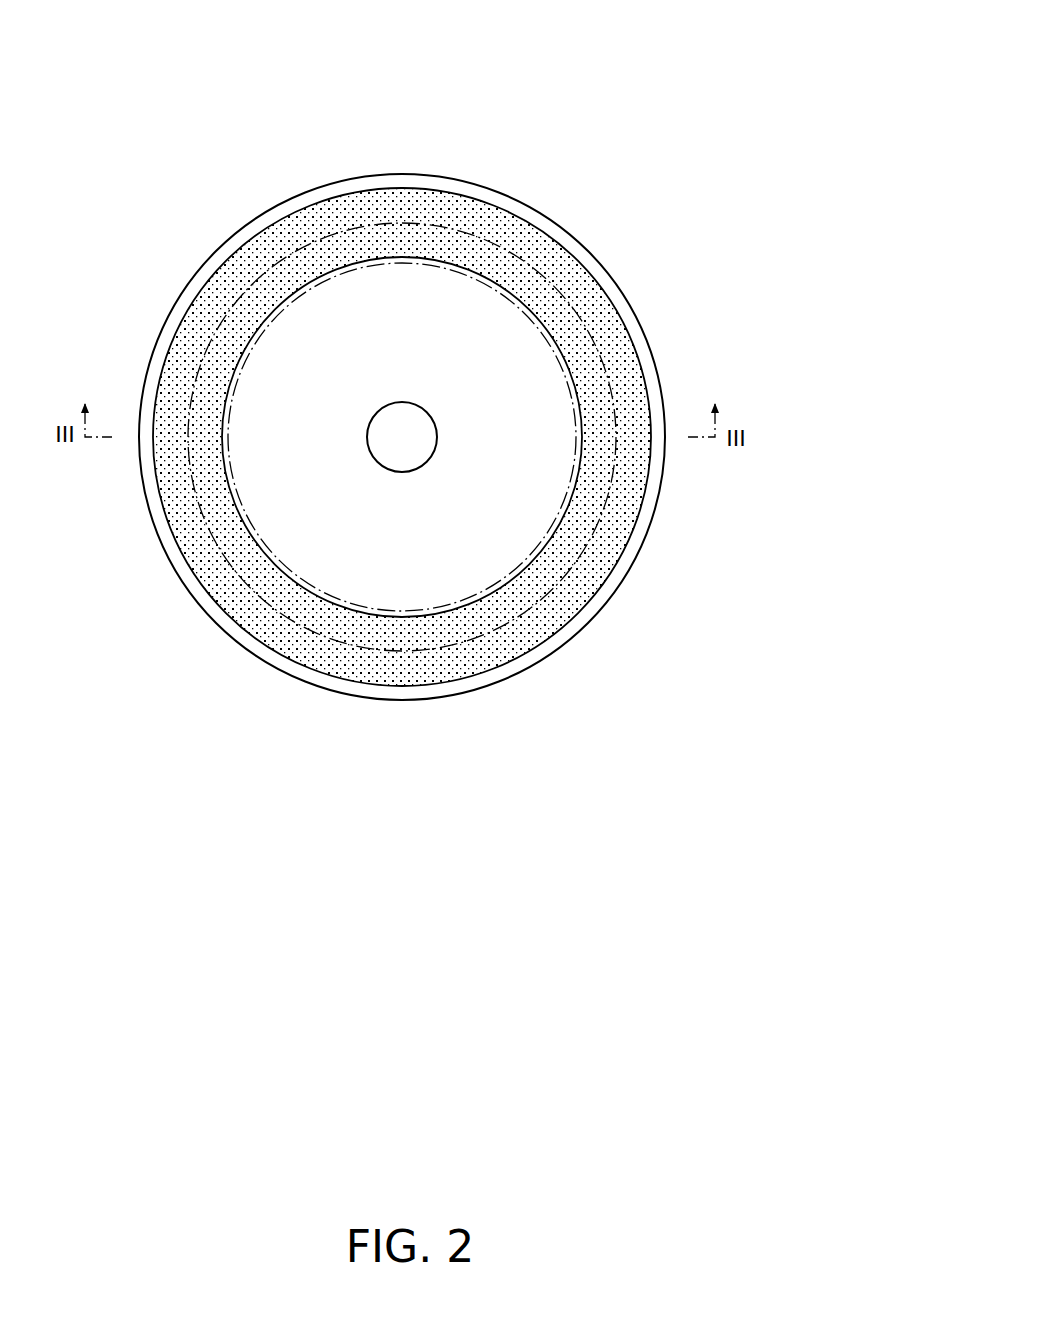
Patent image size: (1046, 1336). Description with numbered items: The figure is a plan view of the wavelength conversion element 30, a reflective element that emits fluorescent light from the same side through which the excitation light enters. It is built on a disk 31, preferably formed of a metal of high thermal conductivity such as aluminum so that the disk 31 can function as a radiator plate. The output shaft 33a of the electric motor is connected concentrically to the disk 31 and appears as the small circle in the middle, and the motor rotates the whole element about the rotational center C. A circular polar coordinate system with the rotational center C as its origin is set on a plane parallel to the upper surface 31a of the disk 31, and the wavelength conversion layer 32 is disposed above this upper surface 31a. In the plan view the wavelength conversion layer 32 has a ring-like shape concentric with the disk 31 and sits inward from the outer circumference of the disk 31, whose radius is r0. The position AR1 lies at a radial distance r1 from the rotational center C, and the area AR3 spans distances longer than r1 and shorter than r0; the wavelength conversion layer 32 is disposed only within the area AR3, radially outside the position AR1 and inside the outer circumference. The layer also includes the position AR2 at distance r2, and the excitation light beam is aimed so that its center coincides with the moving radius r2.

The wavelength conversion element 30 is at (648, 96).
The disk 31 is at (646, 326).
The upper surface 31a is at (347, 297).
The wavelength conversion layer 32 is at (623, 524).
The output shaft 33a is at (380, 452).
The position AR1 is at (358, 605).
The position AR2 is at (582, 557).
The area AR3 is at (596, 300).
The rotational center C is at (402, 440).
The radius of the disk r0 is at (402, 176).
The distance r1 is at (402, 437).
The moving radius r2 is at (553, 286).